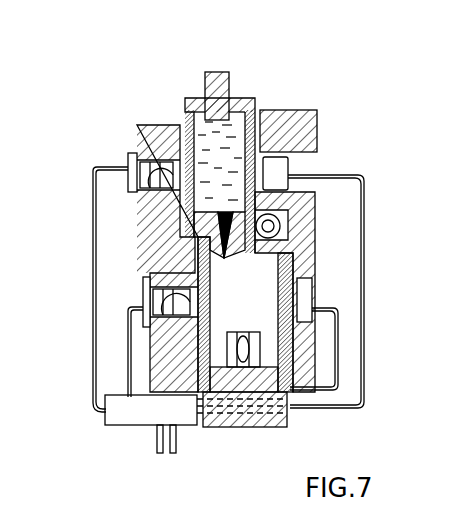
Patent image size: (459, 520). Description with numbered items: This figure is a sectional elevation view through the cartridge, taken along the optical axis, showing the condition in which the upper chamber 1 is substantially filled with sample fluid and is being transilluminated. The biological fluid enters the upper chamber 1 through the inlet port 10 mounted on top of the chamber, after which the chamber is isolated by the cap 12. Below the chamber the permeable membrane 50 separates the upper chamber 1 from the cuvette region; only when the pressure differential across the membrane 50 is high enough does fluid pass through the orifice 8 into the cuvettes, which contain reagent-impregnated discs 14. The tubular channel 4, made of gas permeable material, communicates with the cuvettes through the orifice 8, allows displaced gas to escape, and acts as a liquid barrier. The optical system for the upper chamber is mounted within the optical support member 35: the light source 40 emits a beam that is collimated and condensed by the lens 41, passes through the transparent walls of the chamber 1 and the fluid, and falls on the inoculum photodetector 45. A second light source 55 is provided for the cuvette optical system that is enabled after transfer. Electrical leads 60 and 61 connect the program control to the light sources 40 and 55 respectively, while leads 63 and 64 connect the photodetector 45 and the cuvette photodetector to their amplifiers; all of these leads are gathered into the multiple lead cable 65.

The upper chamber 1 is at (212, 146).
The tubular channel 4 is at (302, 206).
The orifice 8 is at (270, 240).
The inlet port 10 is at (242, 96).
The cap 12 is at (206, 70).
The disc 14 is at (242, 334).
The optical support member 35 is at (152, 125).
The light source 40 is at (128, 158).
The lens 41 is at (137, 195).
The inoculum photodetector 45 is at (290, 165).
The permeable membrane 50 is at (228, 248).
The light source 55 is at (143, 285).
The electrical lead 60 is at (93, 340).
The electrical lead 61 is at (128, 340).
The lead 63 is at (366, 266).
The lead 64 is at (318, 306).
The multiple lead cable 65 is at (156, 438).